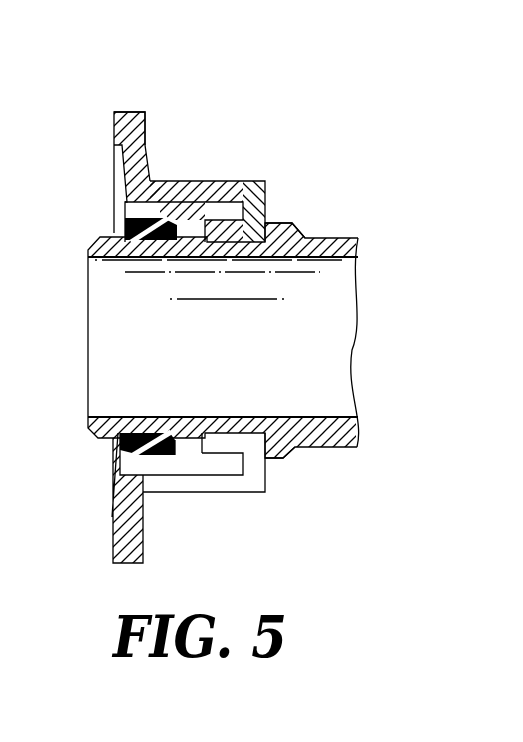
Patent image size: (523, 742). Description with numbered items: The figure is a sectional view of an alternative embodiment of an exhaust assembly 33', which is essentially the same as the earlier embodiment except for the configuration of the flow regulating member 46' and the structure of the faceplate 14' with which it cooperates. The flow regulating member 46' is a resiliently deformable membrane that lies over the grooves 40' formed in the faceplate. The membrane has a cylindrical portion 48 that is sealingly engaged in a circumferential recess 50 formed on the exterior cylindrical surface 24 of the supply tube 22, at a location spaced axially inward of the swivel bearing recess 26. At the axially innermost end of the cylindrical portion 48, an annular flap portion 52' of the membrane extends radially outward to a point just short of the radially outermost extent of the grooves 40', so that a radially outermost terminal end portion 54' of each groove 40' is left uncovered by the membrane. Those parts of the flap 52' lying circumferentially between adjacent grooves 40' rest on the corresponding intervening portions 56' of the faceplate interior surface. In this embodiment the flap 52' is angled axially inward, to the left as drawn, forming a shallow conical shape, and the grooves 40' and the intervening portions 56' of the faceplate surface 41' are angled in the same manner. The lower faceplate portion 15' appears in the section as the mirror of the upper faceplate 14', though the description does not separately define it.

The faceplate 14' is at (125, 156).
The lower flange 15' is at (164, 498).
The supply tube 22 is at (243, 309).
The exterior cylindrical surface 24 is at (312, 235).
The swivel bearing recess 26 is at (245, 258).
The exhaust assembly 33' is at (194, 145).
The grooves 40' is at (192, 482).
The faceplate surface 41' is at (141, 463).
The flow regulating member 46' is at (142, 409).
The cylindrical portion 48 is at (176, 447).
The circumferential recess 50 is at (152, 258).
The annular flap portion 52' is at (82, 191).
The terminal end portion 54' is at (91, 117).
The intervening portions 56' is at (195, 181).